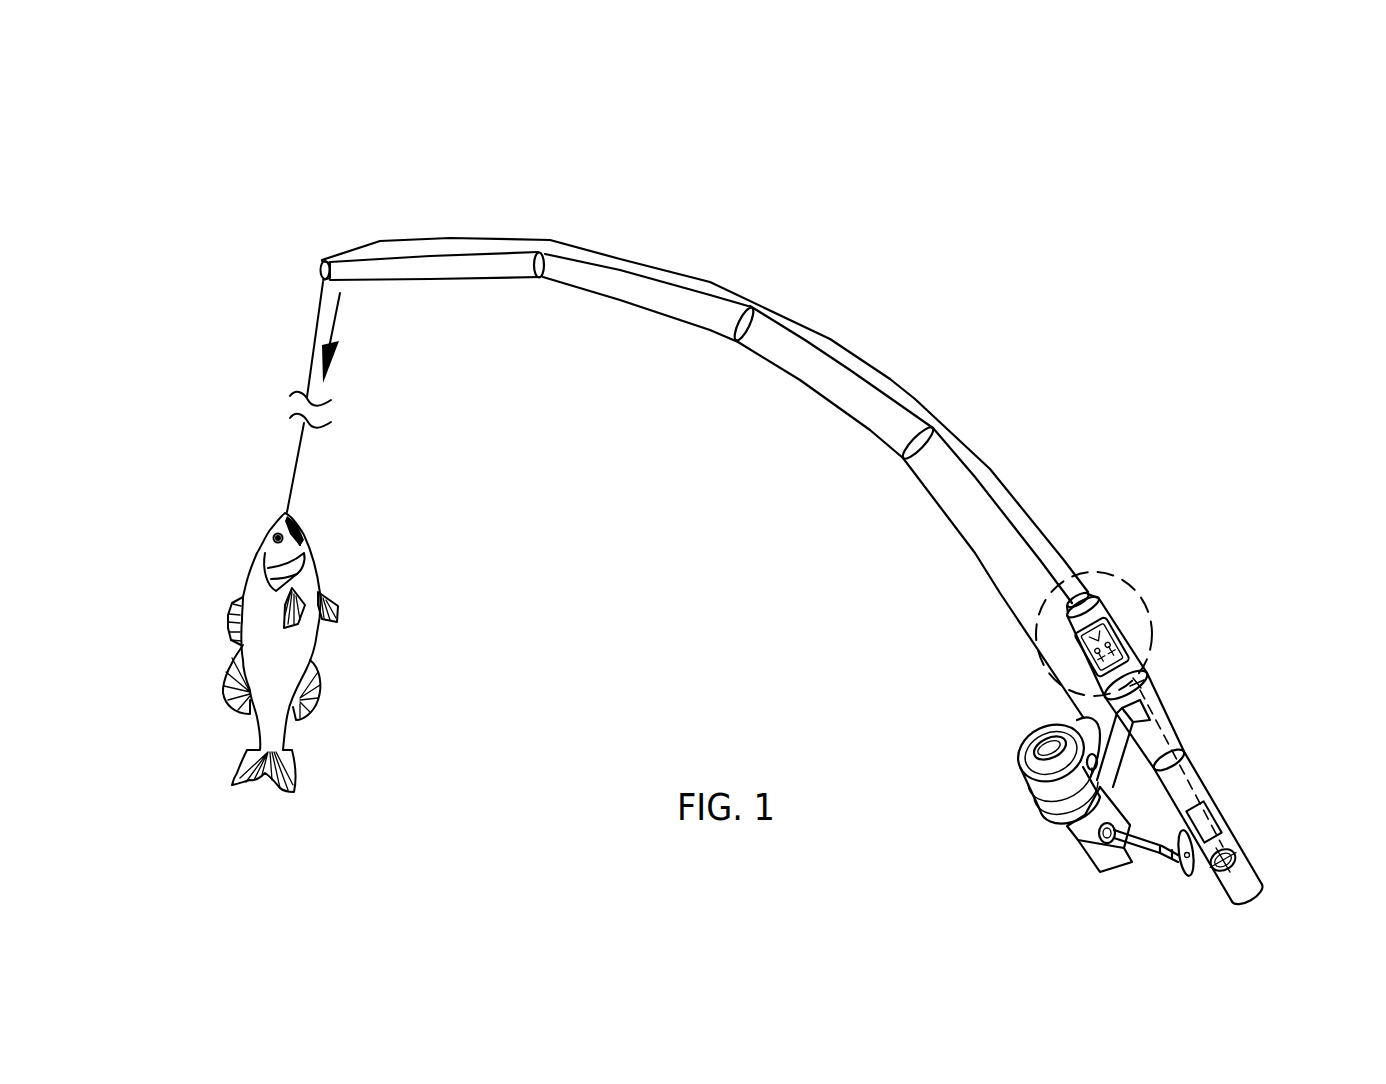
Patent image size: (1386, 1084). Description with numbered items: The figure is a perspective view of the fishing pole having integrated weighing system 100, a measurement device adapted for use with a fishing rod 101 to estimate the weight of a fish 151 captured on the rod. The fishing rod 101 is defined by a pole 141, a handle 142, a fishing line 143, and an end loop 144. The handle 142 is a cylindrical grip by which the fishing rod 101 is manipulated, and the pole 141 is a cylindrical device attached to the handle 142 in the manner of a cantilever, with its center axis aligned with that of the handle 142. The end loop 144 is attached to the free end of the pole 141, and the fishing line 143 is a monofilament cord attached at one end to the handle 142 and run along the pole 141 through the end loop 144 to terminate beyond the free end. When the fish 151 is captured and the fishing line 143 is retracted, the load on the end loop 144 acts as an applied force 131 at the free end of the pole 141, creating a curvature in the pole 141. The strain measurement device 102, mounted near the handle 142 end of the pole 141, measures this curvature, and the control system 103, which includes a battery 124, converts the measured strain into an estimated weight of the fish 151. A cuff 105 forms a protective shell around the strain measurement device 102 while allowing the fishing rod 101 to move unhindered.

The fishing pole having integrated weighing system 100 is at (283, 160).
The fishing rod 101 is at (1001, 290).
The strain measurement device 102 is at (1149, 621).
The control system 103 is at (1220, 806).
The cuff 105 is at (1100, 598).
The battery 124 is at (1240, 849).
The force 131 is at (333, 323).
The pole 141 is at (663, 266).
The handle 142 is at (1190, 754).
The fishing line 143 is at (596, 298).
The end loop 144 is at (318, 262).
The fish 151 is at (307, 638).